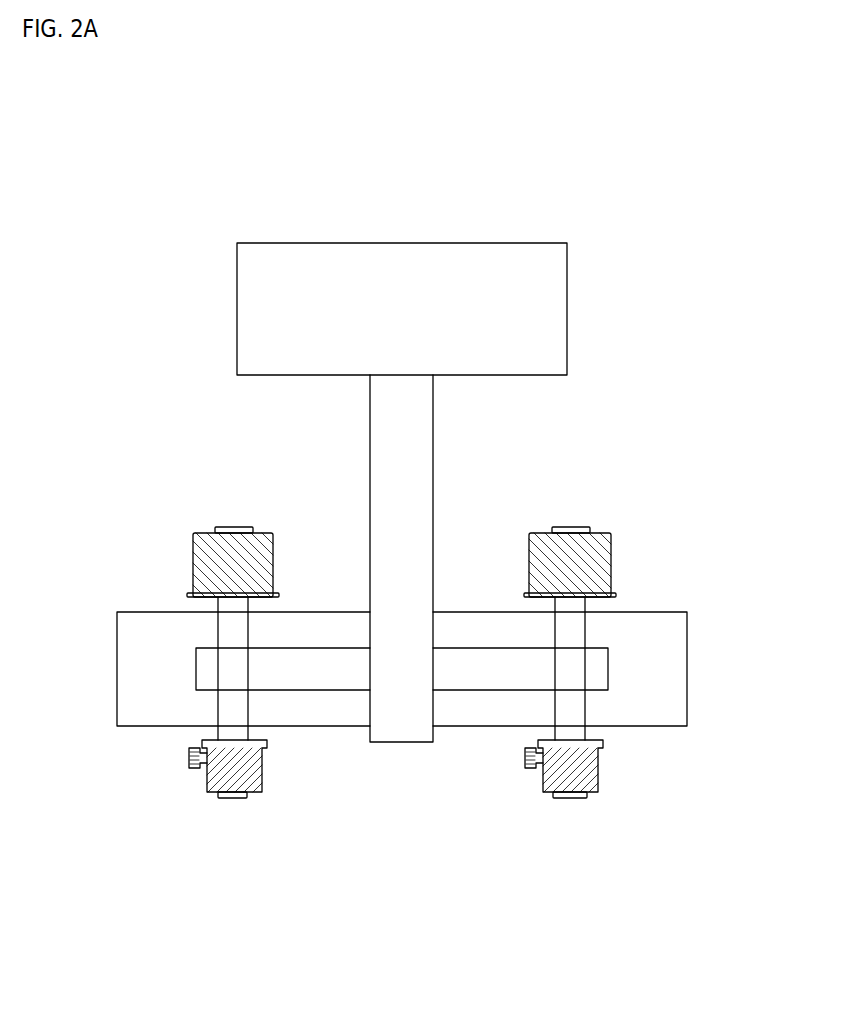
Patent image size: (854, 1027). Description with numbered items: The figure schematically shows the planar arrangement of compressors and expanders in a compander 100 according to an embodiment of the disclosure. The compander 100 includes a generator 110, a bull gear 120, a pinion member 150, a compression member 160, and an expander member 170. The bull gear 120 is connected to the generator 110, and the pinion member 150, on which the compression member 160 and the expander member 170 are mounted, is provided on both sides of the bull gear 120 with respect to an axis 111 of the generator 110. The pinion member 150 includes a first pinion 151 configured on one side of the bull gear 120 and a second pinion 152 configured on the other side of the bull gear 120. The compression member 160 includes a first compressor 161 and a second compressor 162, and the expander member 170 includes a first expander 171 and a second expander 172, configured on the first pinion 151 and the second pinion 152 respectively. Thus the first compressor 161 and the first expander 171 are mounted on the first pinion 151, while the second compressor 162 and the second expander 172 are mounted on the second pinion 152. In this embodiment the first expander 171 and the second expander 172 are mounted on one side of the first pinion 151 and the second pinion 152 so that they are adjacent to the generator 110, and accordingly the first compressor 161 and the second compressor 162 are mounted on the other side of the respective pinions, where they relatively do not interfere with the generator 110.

The compander 100 is at (643, 140).
The generator 110 is at (555, 310).
The axis 111 is at (422, 466).
The bull gear 120 is at (457, 658).
The pinion member 150 is at (382, 987).
The first pinion 151 is at (237, 705).
The second pinion 152 is at (573, 703).
The compression member 160 is at (530, 987).
The first compressor 161 is at (250, 793).
The second compressor 162 is at (590, 793).
The expander member 170 is at (675, 987).
The first expander 171 is at (256, 535).
The second expander 172 is at (592, 535).